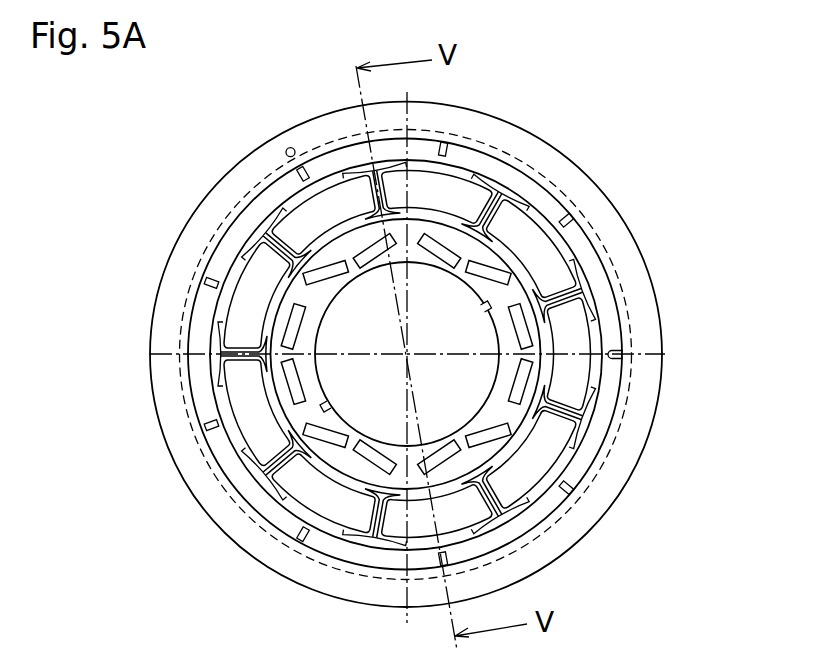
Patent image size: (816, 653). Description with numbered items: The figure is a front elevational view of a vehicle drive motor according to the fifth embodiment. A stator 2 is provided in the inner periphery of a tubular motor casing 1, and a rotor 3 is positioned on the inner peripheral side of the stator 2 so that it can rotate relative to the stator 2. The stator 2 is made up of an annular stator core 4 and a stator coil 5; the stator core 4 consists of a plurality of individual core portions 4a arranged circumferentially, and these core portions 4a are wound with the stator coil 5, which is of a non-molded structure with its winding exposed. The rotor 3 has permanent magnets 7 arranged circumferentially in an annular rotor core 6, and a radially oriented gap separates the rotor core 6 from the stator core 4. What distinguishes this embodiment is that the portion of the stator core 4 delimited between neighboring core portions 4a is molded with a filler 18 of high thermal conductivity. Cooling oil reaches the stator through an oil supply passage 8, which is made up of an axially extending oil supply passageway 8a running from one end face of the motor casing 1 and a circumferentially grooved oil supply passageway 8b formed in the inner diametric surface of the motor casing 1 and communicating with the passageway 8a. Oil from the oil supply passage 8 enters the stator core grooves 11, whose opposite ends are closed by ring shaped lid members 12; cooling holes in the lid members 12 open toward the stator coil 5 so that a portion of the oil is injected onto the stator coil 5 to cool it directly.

The motor casing 1 is at (184, 224).
The stator 2 is at (96, 297).
The rotor 3 is at (544, 273).
The stator core 4 is at (205, 344).
The individual core portions 4a is at (466, 168).
The stator coil 5 is at (222, 332).
The rotor core 6 is at (543, 202).
The permanent magnets 7 is at (535, 377).
The oil supply passage 8 is at (166, 96).
The axially extending oil supply passageway 8a is at (288, 149).
The circumferentially grooved oil supply passageway 8b is at (272, 168).
The stator core grooves 11 is at (452, 132).
The ring shaped lid members 12 is at (186, 262).
The filler 18 is at (382, 207).